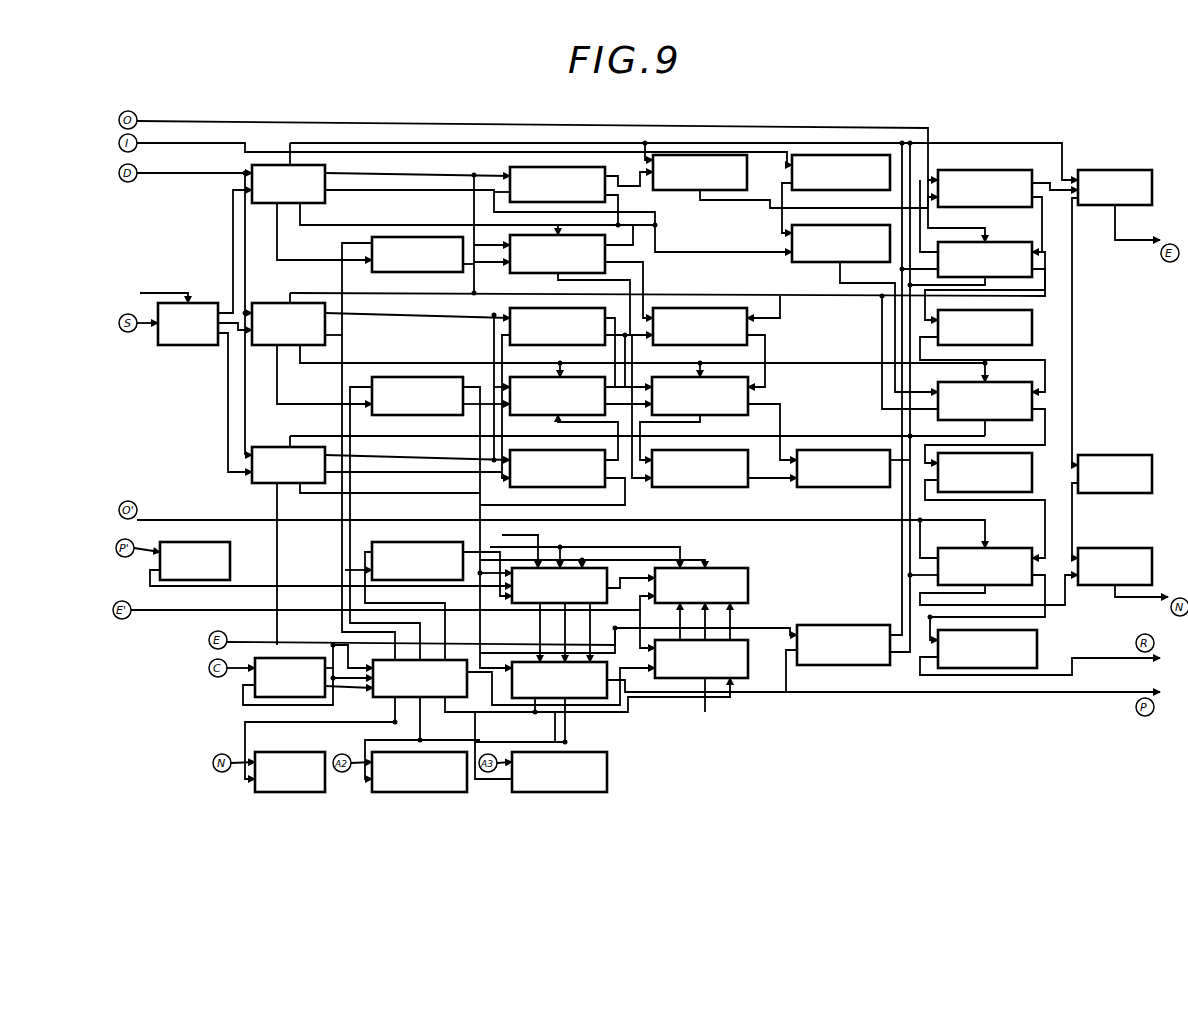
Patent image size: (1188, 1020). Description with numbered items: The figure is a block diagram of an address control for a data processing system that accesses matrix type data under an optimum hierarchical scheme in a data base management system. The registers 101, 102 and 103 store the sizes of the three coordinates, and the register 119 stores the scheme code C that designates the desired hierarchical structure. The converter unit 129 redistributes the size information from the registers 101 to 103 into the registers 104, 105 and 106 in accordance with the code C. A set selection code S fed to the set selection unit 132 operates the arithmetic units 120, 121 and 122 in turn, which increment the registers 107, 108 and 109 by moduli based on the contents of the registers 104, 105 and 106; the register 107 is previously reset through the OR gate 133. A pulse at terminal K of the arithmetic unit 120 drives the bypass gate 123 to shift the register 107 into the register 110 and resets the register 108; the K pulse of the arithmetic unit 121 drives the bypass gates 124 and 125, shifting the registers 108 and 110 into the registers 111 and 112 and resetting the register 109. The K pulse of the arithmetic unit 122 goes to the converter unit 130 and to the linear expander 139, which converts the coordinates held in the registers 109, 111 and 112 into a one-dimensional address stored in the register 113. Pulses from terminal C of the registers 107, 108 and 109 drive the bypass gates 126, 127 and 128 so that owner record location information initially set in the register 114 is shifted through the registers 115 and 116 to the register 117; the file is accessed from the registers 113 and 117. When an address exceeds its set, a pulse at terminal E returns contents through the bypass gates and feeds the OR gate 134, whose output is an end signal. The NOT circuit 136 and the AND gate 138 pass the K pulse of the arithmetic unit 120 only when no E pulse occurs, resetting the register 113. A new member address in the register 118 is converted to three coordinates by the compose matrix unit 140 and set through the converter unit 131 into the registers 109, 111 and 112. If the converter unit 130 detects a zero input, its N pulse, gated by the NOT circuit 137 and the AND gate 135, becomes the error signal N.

The register unit 101 is at (300, 793).
The register unit 102 is at (432, 794).
The register unit 103 is at (560, 795).
The register unit 104 is at (372, 240).
The register unit 105 is at (414, 416).
The register unit 106 is at (428, 548).
The register unit 107 is at (510, 170).
The register unit 108 is at (510, 311).
The register unit 109 is at (552, 487).
The register unit 110 is at (717, 326).
The register unit 111 is at (718, 488).
The register unit 112 is at (865, 450).
The register unit 113 is at (853, 635).
The register unit 114 is at (1010, 168).
The register unit 115 is at (1032, 320).
The register unit 116 is at (1032, 463).
The register unit 117 is at (1037, 645).
The register unit 118 is at (230, 546).
The register unit 119 is at (255, 685).
The arithmetic unit 120 is at (325, 168).
The arithmetic unit 121 is at (262, 303).
The arithmetic unit 122 is at (268, 447).
The bypass gate 123 is at (510, 273).
The bypass gate 124 is at (535, 416).
The bypass gate 125 is at (686, 416).
The bypass gate 126 is at (1028, 250).
The bypass gate 127 is at (1030, 380).
The bypass gate 128 is at (1030, 548).
The converter unit 129 is at (374, 697).
The converter unit 130 is at (612, 600).
The converter unit 131 is at (748, 600).
The set selection unit 132 is at (158, 306).
The OR gate 133 is at (747, 191).
The OR gate 134 is at (1120, 172).
The AND gate 135 is at (1140, 538).
The NOT circuit 136 is at (851, 195).
The NOT circuit 137 is at (1142, 448).
The AND gate 138 is at (848, 265).
The linear expander 139 is at (512, 690).
The compose matrix unit 140 is at (748, 659).